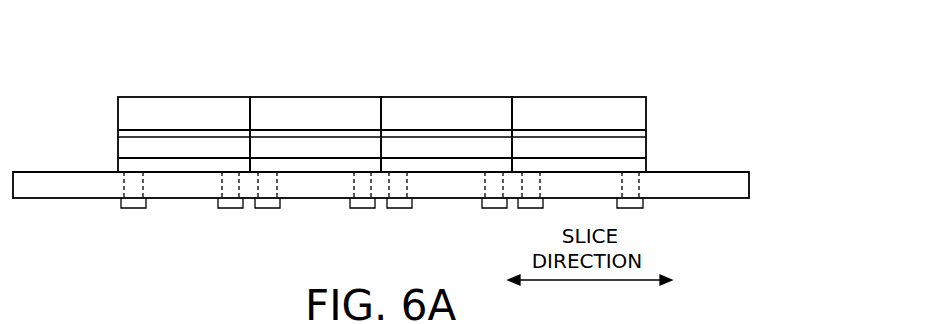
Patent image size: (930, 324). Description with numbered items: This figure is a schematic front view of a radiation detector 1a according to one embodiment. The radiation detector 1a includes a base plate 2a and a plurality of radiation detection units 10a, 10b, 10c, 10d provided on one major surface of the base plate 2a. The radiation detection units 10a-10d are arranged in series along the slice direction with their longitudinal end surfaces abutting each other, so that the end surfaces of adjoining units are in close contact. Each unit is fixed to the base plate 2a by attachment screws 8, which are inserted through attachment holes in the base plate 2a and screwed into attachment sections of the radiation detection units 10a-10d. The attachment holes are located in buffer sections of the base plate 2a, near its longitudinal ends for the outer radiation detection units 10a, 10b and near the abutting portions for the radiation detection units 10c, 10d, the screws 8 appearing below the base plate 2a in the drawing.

The radiation detector 1a is at (733, 102).
The base plate 2a is at (717, 168).
The attachment screws 8 is at (118, 211).
The radiation detection unit 10a is at (170, 88).
The radiation detection unit 10b is at (573, 88).
The radiation detection unit 10c is at (317, 88).
The radiation detection unit 10d is at (445, 88).